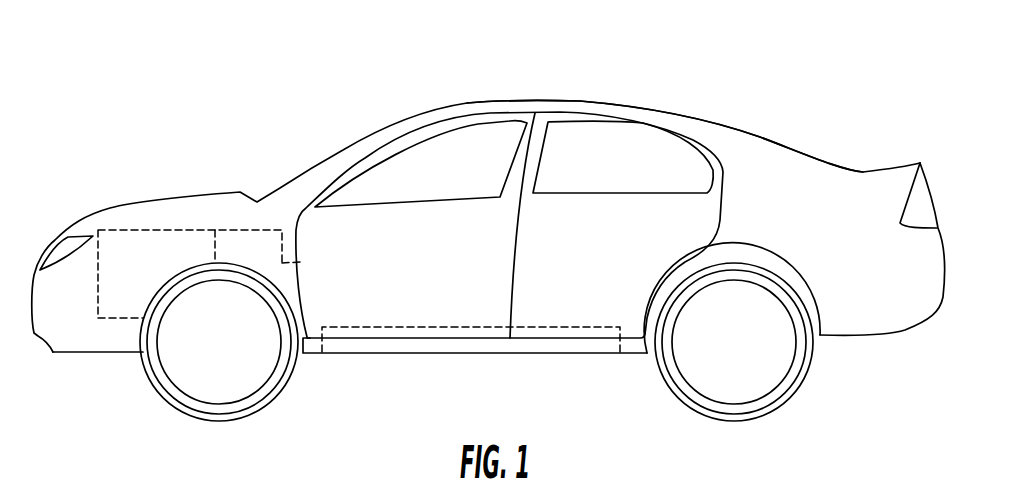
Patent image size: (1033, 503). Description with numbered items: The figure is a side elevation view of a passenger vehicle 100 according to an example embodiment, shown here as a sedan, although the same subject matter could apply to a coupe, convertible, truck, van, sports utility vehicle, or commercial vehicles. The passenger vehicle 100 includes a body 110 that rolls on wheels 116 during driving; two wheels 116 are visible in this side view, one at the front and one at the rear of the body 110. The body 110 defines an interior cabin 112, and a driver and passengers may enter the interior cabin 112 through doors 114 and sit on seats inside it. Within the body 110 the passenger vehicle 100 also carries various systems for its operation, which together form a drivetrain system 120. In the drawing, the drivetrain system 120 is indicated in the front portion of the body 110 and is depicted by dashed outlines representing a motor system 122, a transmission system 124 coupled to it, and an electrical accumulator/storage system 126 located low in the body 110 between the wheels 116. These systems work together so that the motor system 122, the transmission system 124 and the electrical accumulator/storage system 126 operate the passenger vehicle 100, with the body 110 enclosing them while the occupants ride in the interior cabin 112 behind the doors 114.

The passenger vehicle 100 is at (392, 104).
The body 110 is at (740, 130).
The interior cabin 112 is at (582, 146).
The doors 114 is at (362, 167).
The wheels 116 is at (193, 372).
The drivetrain system 120 is at (207, 208).
The motor system 122 is at (173, 230).
The transmission system 124 is at (300, 262).
The electrical accumulator/storage system 126 is at (402, 327).